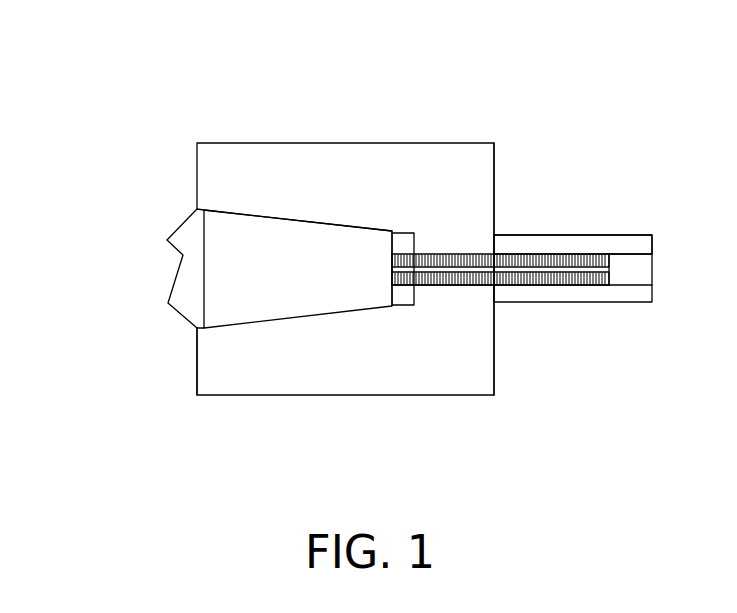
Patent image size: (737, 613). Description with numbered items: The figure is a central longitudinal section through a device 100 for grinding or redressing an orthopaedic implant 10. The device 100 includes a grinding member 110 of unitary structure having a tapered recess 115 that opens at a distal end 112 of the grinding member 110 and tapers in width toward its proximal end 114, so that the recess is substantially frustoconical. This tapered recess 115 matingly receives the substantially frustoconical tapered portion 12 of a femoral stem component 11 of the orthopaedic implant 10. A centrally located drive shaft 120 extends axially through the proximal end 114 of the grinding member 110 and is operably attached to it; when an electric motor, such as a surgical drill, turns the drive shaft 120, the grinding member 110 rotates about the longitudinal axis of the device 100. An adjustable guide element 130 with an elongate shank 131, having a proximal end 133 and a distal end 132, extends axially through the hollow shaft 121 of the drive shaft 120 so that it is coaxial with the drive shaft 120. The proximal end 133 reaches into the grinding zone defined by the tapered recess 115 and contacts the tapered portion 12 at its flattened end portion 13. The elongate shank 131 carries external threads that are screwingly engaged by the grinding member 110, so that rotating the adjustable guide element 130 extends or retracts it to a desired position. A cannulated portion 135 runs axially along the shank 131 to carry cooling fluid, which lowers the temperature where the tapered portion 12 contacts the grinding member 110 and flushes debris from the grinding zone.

The device 100 is at (588, 50).
The orthopaedic implant 10 is at (92, 265).
The femoral stem component 11 is at (185, 222).
The tapered portion 12 is at (230, 233).
The flattened end portion 13 is at (397, 233).
The grinding member 110 is at (295, 173).
The distal end 112 is at (197, 360).
The proximal end 114 is at (494, 167).
The tapered recess 115 is at (347, 225).
The drive shaft 120 is at (633, 235).
The hollow shaft 121 is at (523, 247).
The adjustable guide element 130 is at (562, 285).
The elongate shank 131 is at (515, 280).
The distal end 132 is at (399, 285).
The proximal end 133 is at (609, 285).
The cannulated portion 135 is at (572, 263).